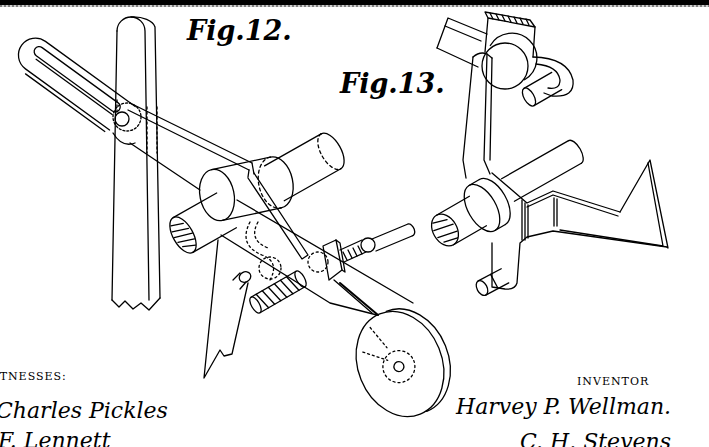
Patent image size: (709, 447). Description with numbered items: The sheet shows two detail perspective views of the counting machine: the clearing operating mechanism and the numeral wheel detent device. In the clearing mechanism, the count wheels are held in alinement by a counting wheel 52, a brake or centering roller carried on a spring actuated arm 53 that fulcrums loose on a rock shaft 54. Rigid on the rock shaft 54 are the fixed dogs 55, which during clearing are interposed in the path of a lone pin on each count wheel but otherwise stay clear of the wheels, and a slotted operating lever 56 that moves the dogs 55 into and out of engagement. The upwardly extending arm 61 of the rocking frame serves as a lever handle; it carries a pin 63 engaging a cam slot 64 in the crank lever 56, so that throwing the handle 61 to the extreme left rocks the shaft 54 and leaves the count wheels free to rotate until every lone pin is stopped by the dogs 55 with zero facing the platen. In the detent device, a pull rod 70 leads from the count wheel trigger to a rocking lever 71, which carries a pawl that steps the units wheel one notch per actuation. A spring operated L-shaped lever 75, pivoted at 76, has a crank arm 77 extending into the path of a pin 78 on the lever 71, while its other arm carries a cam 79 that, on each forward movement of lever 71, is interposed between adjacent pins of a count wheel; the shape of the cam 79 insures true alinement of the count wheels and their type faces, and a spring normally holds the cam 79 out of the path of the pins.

In FIG. 12, the counting wheel 52 is at (433, 326).
In FIG. 12, the spring actuated arm 53 is at (264, 228).
In FIG. 12, the rock shaft 54 is at (256, 193).
In FIG. 12, the fixed dogs 55 is at (228, 309).
In FIG. 12, the slotted operating lever 56 is at (218, 181).
In FIG. 12, the upwardly extending arm 61 is at (160, 82).
In FIG. 12, the pin 63 is at (116, 124).
In FIG. 12, the cam slot 64 is at (55, 72).
In FIG. 13, the pull rod 70 is at (462, 42).
In FIG. 13, the rocking lever 71 is at (534, 38).
In FIG. 13, the L-shaped lever 75 is at (570, 218).
In FIG. 13, the pivot 76 is at (463, 185).
In FIG. 13, the crank arm 77 is at (482, 120).
In FIG. 13, the pin 78 is at (537, 98).
In FIG. 13, the cam 79 is at (614, 204).